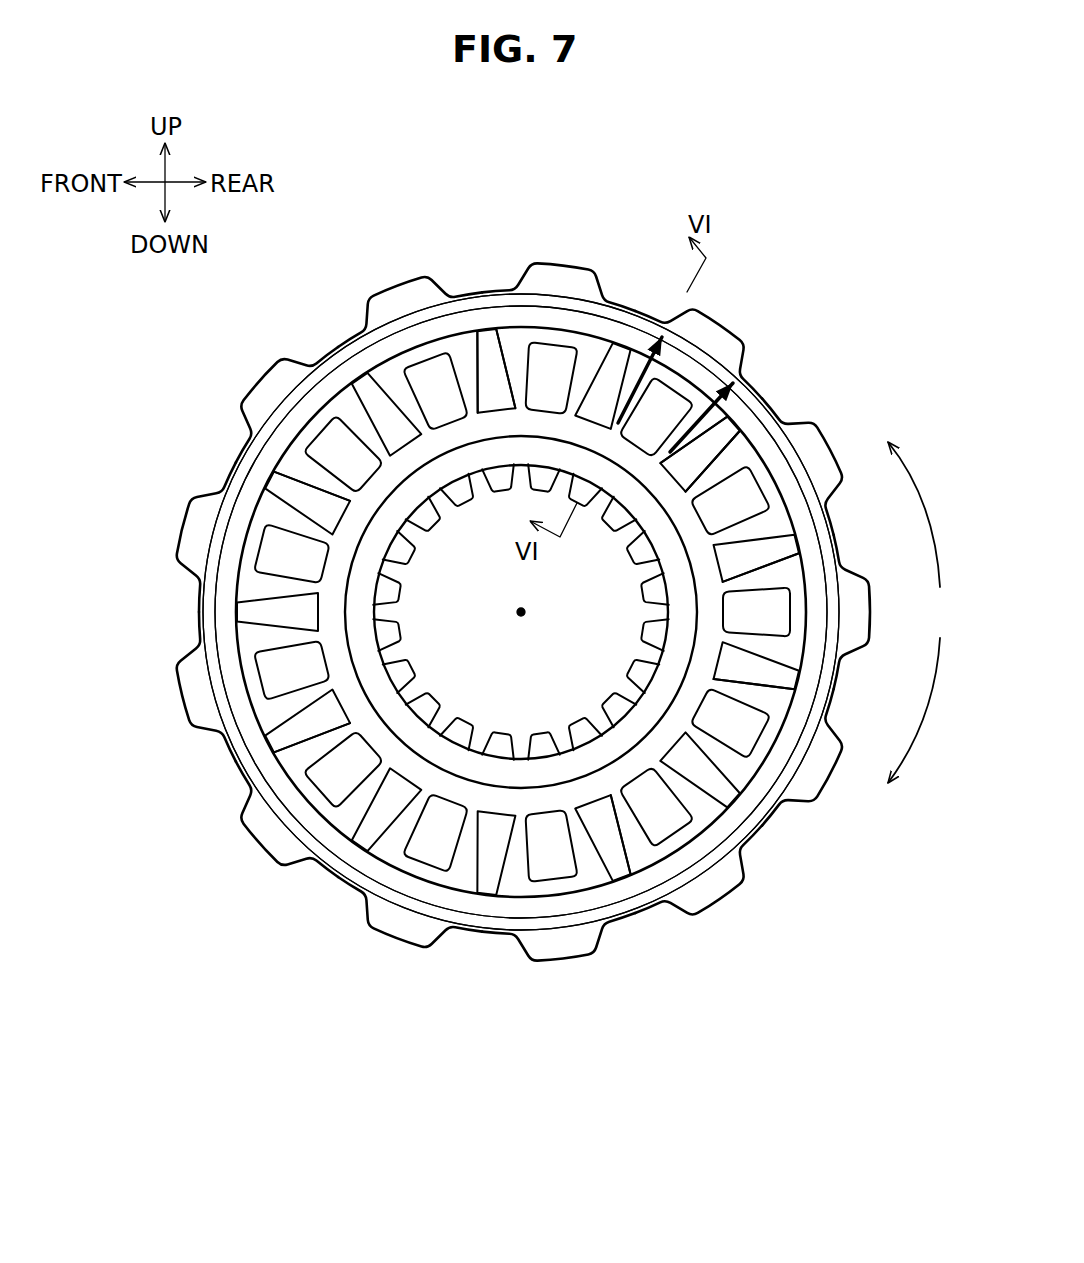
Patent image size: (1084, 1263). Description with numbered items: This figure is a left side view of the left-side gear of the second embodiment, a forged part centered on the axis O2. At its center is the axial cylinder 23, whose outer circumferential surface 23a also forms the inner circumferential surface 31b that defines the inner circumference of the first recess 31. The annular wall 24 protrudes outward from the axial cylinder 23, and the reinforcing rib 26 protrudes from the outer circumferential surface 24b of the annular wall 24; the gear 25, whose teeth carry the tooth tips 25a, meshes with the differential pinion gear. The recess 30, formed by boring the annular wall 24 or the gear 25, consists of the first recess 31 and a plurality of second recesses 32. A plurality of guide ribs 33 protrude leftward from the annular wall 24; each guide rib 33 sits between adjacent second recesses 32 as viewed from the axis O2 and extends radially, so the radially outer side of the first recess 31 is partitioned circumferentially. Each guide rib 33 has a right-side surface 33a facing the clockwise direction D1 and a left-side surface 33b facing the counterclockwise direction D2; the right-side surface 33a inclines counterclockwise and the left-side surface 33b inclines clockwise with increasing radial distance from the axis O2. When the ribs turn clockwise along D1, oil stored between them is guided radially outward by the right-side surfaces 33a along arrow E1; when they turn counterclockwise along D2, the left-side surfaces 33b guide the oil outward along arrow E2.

The axial cylinder 23 is at (402, 565).
The outer circumferential surface of the axial cylinder 23a is at (697, 803).
The annular wall 24 is at (345, 860).
The outer circumferential surface of the annular wall 24b is at (521, 612).
The gear 25 is at (385, 958).
The tooth tip 25a is at (572, 266).
The reinforcing rib 26 is at (245, 470).
The recess 30 is at (521, 612).
The first recess 31 is at (745, 880).
The inner circumferential surface of the first recess 31b is at (712, 461).
The second recess 32 is at (432, 383).
The guide rib 33 is at (493, 410).
The right-side surface 33a is at (512, 350).
The left-side surface 33b is at (478, 345).
The axis O2 is at (525, 614).
The arrow E1 is at (660, 325).
The arrow E2 is at (745, 380).
The arrow D1 is at (926, 710).
The arrow D2 is at (926, 514).